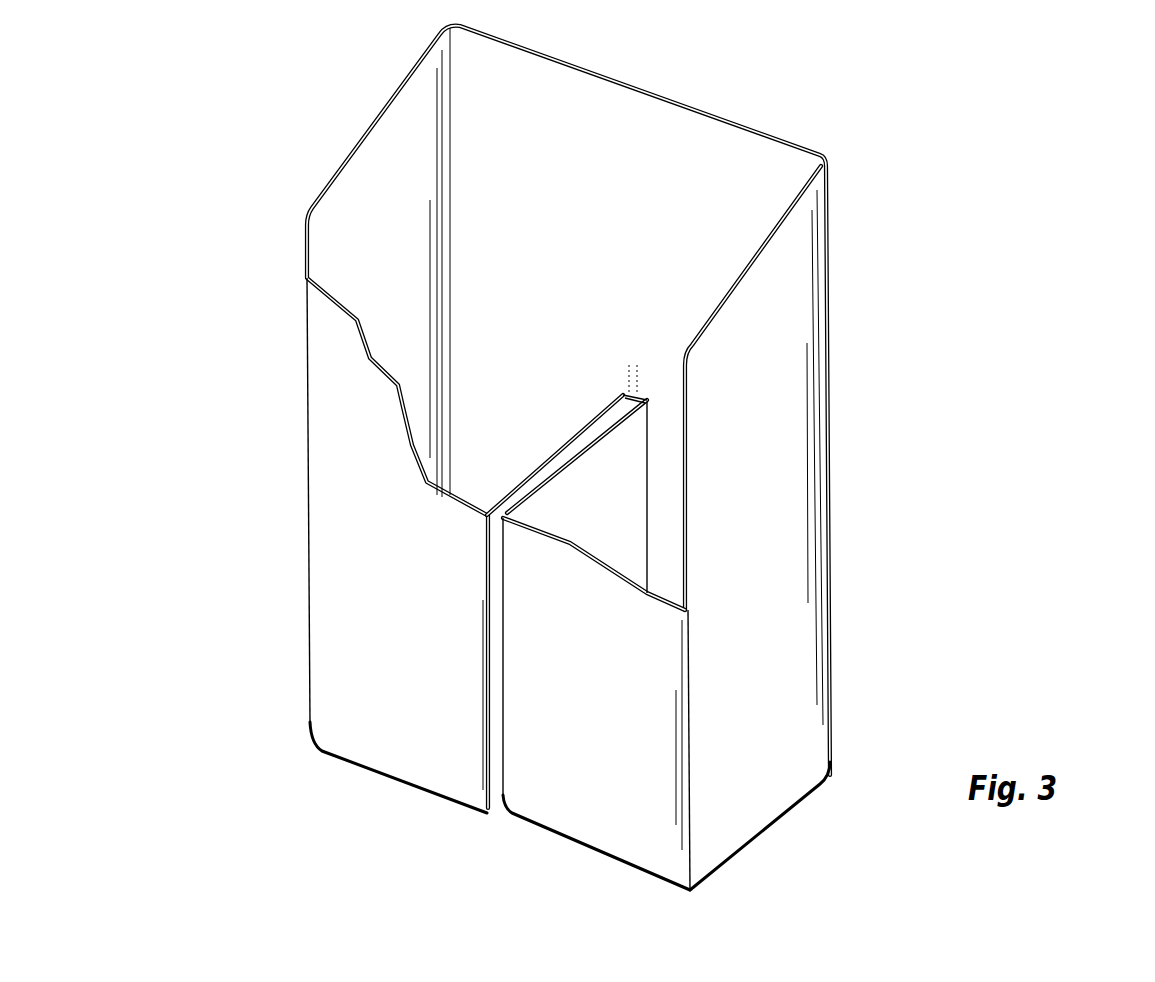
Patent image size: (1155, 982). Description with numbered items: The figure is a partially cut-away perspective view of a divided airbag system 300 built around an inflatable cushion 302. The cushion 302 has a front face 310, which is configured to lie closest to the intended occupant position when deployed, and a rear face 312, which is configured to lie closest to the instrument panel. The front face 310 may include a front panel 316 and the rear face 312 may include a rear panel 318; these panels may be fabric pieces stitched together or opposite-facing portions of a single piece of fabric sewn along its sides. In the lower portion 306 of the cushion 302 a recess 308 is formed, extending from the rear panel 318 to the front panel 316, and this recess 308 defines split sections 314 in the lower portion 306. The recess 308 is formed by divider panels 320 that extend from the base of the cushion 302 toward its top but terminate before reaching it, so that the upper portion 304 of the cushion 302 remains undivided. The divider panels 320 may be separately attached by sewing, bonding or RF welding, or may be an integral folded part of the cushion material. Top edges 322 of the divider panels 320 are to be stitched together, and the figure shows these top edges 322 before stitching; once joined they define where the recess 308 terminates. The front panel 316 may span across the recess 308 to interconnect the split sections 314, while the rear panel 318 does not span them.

The divided airbag system 300 is at (635, 458).
The inflatable cushion 302 is at (350, 131).
The upper portion 304 is at (800, 258).
The lower portion 306 is at (623, 723).
The recess 308 is at (502, 818).
The front face 310 is at (688, 144).
The rear face 312 is at (335, 494).
The split sections 314 is at (385, 762).
The front panel 316 is at (598, 219).
The rear panel 318 is at (366, 423).
The divider panels 320 is at (496, 580).
The top edges 322 is at (580, 447).